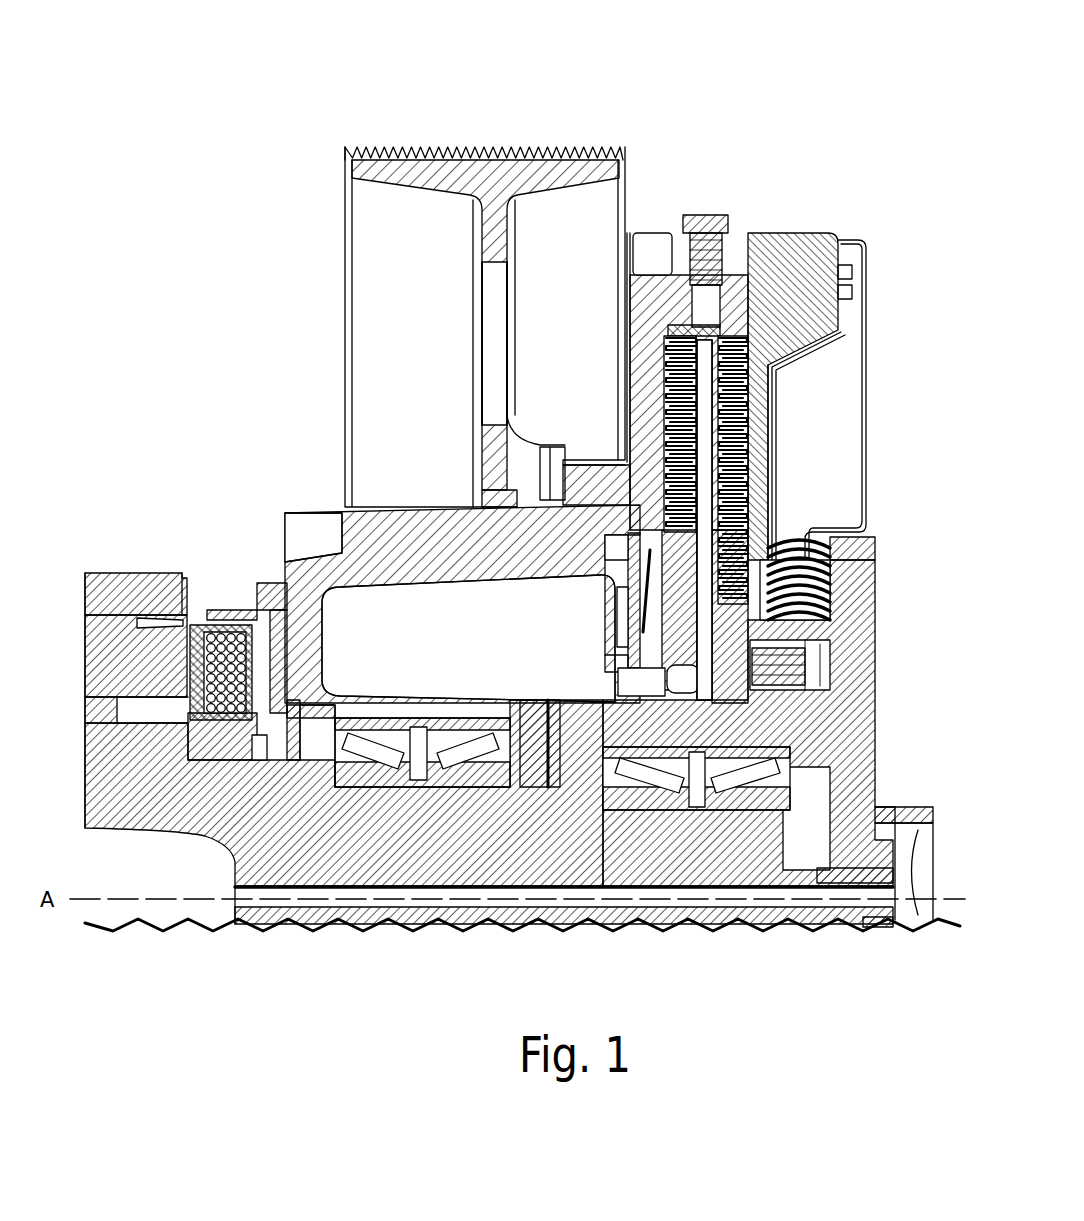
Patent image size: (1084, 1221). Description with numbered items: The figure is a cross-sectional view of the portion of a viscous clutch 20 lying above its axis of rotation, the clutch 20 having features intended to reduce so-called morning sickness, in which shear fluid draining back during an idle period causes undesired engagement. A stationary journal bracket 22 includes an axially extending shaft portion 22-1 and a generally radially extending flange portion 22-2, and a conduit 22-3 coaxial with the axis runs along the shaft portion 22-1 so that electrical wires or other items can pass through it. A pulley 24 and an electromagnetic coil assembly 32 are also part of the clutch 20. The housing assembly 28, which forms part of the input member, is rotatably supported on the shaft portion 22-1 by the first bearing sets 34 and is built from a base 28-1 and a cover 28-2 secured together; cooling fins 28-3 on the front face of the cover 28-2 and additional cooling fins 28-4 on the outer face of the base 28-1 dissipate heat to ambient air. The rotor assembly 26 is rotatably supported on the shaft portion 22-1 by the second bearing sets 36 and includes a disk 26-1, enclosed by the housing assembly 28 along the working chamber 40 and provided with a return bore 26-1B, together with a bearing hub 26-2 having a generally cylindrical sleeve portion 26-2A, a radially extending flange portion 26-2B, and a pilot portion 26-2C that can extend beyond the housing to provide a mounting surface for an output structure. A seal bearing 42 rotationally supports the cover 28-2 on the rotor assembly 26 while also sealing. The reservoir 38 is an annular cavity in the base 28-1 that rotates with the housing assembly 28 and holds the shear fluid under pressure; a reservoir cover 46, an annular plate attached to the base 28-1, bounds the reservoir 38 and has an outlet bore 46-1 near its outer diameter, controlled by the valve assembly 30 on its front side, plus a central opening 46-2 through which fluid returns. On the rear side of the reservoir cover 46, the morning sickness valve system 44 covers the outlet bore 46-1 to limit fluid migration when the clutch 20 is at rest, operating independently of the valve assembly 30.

The clutch 20 is at (228, 122).
The journal bracket 22 is at (88, 612).
The shaft portion 22-1 is at (500, 910).
The flange portion 22-2 is at (157, 593).
The conduit 22-3 is at (345, 910).
The pulley 24 is at (398, 170).
The rotor assembly 26 is at (718, 648).
The disk 26-1 is at (728, 683).
The return bore 26-1B is at (753, 497).
The bearing hub 26-2 is at (860, 700).
The sleeve portion 26-2A is at (583, 775).
The flange portion 26-2B is at (858, 562).
The pilot portion 26-2C is at (925, 825).
The housing assembly 28 is at (392, 574).
The base 28-1 is at (733, 232).
The cover 28-2 is at (802, 246).
The cooling fins 28-3 is at (850, 312).
The cooling fins 28-4 is at (312, 538).
The valve assembly 30 is at (745, 545).
The electromagnetic coil assembly 32 is at (222, 633).
The first bearing sets 34 is at (468, 768).
The second bearing sets 36 is at (742, 795).
The reservoir 38 is at (468, 638).
The working chamber 40 is at (662, 345).
The seal bearing 42 is at (782, 667).
The morning sickness valve system 44 is at (614, 594).
The reservoir cover 46 is at (633, 604).
The outlet bore 46-1 is at (628, 557).
The central opening 46-2 is at (628, 662).